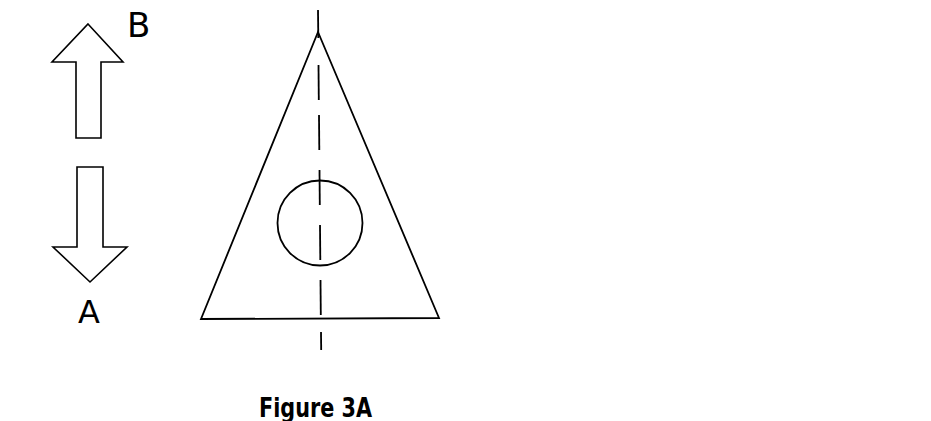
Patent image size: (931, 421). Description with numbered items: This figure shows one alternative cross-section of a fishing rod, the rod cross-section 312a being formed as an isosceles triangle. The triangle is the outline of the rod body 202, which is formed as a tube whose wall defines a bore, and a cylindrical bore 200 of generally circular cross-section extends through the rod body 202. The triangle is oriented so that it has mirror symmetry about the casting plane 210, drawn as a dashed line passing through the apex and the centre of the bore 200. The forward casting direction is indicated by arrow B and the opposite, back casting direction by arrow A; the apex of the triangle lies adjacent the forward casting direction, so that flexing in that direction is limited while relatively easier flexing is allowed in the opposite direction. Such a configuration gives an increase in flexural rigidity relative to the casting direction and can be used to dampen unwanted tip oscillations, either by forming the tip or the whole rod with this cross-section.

The rod body 202 is at (415, 308).
The casting plane 210 is at (322, 133).
The bore 200 is at (348, 228).
The rod cross-section 312a is at (535, 140).